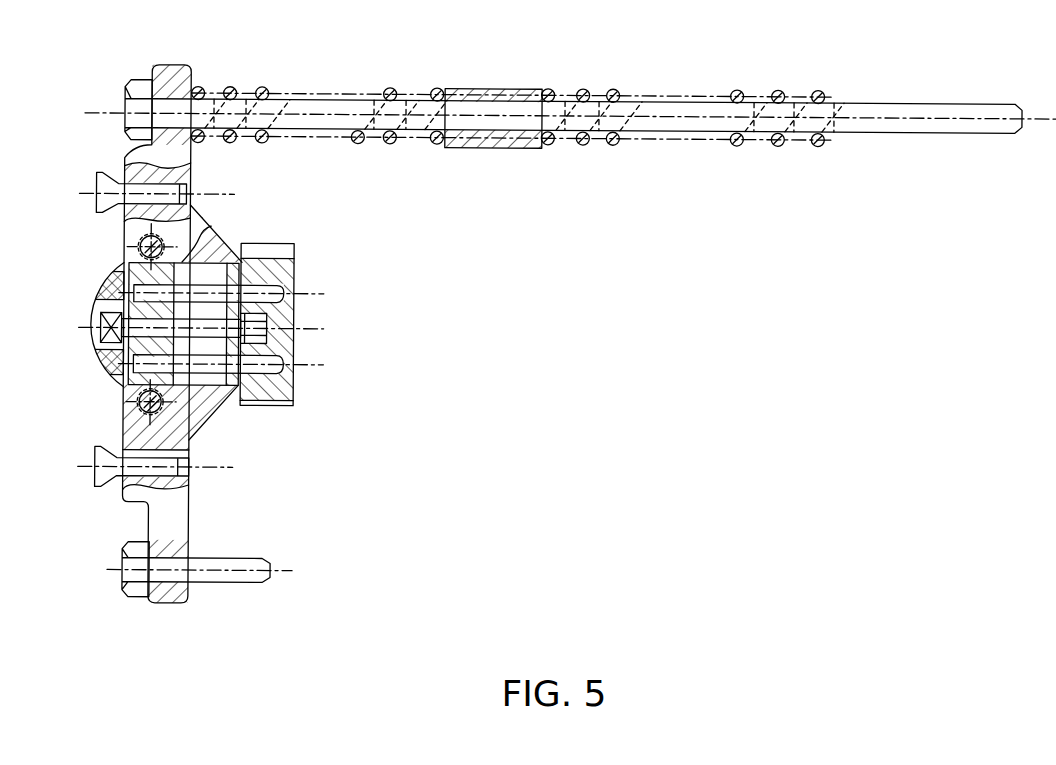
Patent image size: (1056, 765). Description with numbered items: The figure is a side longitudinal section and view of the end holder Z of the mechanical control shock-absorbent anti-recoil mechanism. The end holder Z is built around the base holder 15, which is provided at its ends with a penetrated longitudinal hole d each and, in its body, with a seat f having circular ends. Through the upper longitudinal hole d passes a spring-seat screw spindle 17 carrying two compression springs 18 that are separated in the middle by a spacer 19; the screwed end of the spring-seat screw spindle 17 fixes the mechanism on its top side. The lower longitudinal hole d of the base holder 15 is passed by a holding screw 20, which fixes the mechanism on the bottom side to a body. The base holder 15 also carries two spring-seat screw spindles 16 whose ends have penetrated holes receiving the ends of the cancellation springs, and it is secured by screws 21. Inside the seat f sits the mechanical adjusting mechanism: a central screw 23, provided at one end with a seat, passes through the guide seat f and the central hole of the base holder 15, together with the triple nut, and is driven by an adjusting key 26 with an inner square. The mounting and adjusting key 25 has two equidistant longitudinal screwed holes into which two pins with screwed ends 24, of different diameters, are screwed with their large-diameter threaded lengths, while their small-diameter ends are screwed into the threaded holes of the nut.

The base holder 15 is at (138, 163).
The spring-seat screw spindles 16 is at (141, 245).
The spring-seat screw spindle 17 is at (141, 106).
The compression springs 18 is at (391, 91).
The spacer 19 is at (517, 92).
The holding screw 20 is at (210, 576).
The countersunk screws 21 is at (104, 187).
The central screw 23 is at (103, 322).
The pins with screwed ends 24 is at (270, 290).
The mounting and adjusting key 25 is at (287, 338).
The adjusting key 26 is at (120, 290).
The longitudinal hole d is at (177, 83).
The seat f is at (216, 254).
The end holder Z is at (240, 247).